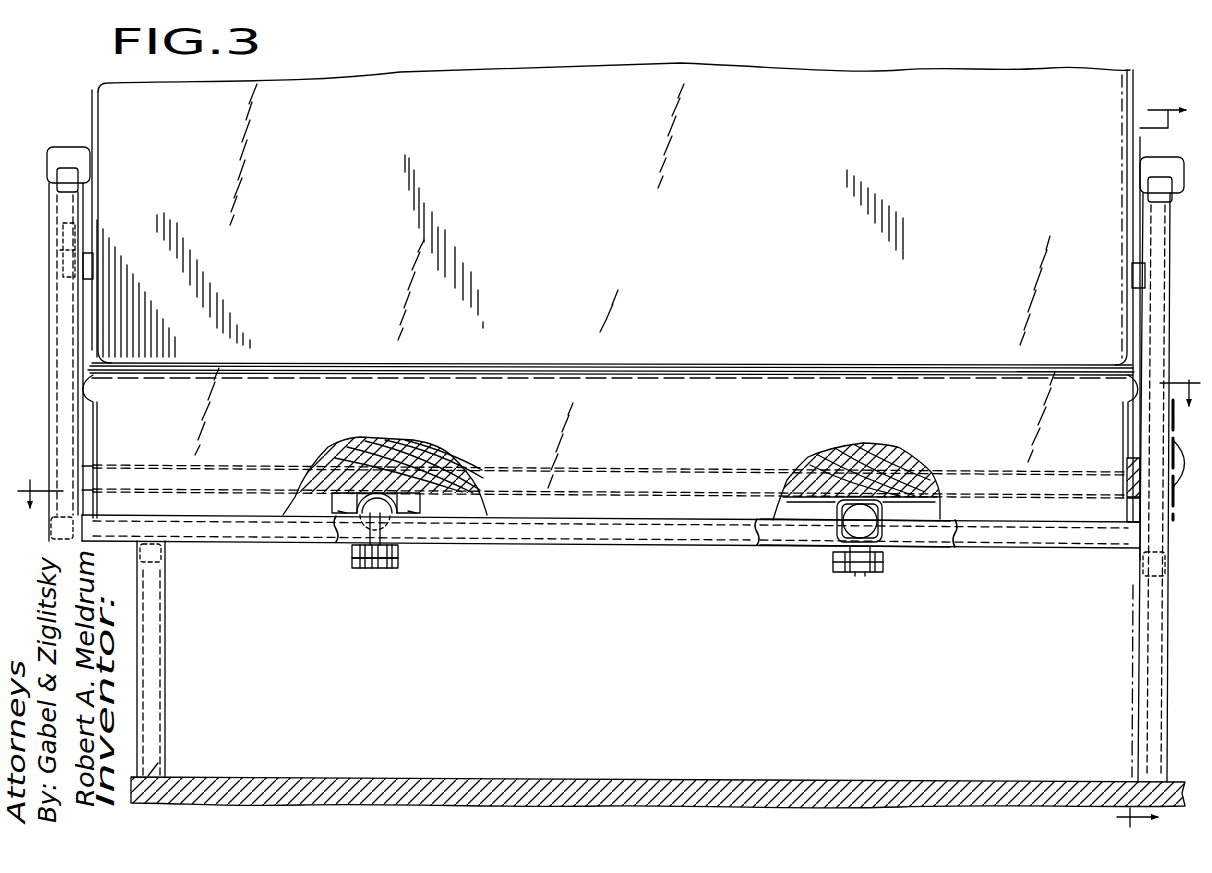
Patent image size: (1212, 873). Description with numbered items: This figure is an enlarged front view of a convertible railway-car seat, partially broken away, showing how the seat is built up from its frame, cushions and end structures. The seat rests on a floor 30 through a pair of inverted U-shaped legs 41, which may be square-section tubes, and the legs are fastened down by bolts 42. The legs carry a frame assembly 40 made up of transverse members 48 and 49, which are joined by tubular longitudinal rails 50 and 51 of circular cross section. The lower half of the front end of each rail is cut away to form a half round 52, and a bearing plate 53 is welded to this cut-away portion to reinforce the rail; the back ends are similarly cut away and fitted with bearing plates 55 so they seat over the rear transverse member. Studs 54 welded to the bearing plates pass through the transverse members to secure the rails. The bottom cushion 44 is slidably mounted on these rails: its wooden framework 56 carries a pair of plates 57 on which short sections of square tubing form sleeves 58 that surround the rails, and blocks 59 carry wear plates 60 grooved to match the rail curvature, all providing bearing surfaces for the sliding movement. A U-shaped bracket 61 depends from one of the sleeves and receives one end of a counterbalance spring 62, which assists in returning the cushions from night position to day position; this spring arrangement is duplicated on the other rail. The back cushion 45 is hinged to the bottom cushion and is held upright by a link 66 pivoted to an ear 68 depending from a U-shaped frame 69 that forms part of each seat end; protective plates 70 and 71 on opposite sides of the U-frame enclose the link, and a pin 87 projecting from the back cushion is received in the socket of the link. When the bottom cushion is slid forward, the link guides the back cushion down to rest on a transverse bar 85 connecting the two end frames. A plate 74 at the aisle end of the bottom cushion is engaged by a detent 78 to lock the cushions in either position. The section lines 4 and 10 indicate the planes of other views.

The section line 10- 10 is at (1134, 454).
The section line 4- 4 is at (608, 432).
The floor 30 is at (786, 752).
The frame assembly 40 is at (180, 549).
The legs 41 is at (166, 686).
The bolts 42 is at (155, 770).
The bottom cushion 44 is at (633, 336).
The back cushion 45 is at (556, 48).
The transverse member 48 is at (490, 547).
The transverse member 49 is at (783, 537).
The rail 50 is at (880, 531).
The rail 51 is at (412, 527).
The half round 52 is at (388, 490).
The bearing plate 53 is at (372, 518).
The studs 54 is at (360, 562).
The bearing plate 55 is at (857, 502).
The wooden framework 56 is at (445, 449).
The plates 57 is at (783, 502).
The sleeves 58 is at (890, 507).
The blocks 59 is at (345, 480).
The wear plate 60 is at (418, 509).
The U-shaped bracket 61 is at (390, 564).
The spring 62 is at (380, 565).
The link 66 is at (62, 264).
The ear 68 is at (55, 210).
The U-shaped frame 69 is at (60, 328).
The protective plate 70 is at (50, 371).
The protective plate 71 is at (95, 297).
The plate 74 is at (1130, 450).
The detent 78 is at (1124, 488).
The transverse bar 85 is at (680, 450).
The pin 87 is at (95, 266).